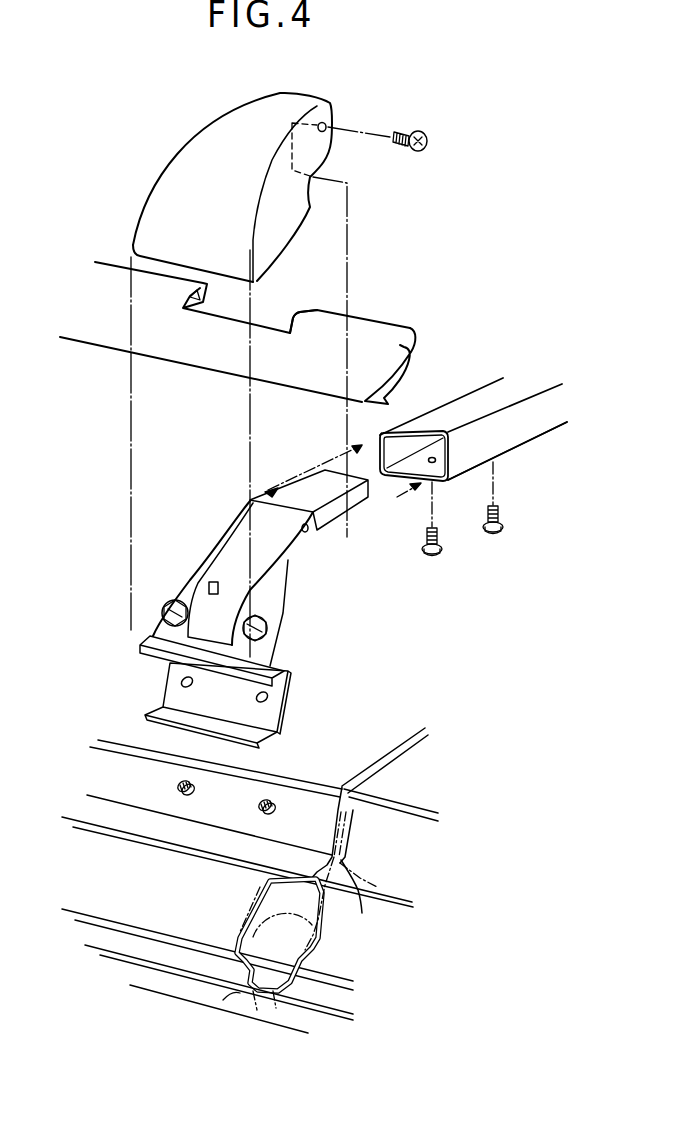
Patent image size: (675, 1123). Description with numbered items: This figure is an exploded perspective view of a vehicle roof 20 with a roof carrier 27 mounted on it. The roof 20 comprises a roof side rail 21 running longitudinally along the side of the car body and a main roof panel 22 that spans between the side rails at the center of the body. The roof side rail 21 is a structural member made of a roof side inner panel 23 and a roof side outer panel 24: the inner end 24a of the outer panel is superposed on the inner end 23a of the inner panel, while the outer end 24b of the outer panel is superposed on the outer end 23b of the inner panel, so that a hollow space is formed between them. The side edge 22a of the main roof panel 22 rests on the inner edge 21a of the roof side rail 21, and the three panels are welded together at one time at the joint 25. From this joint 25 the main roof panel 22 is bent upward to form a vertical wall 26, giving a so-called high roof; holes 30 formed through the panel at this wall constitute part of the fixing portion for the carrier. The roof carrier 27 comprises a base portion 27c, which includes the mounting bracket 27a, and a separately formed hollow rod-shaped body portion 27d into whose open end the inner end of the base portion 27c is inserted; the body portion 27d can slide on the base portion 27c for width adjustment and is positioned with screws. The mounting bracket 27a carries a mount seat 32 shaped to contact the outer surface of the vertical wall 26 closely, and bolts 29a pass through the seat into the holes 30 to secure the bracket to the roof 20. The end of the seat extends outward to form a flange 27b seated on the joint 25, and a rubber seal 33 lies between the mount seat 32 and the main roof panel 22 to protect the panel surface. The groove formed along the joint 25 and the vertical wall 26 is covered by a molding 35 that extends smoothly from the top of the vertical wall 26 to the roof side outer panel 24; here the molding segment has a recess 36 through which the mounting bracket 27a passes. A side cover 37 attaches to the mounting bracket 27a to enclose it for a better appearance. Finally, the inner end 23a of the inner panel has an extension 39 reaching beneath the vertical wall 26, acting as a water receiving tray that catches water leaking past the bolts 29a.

The roof 20 is at (383, 728).
The roof side rail 21 is at (147, 1082).
The inner edge of the roof side rail 21a is at (505, 928).
The main roof panel 22 is at (408, 728).
The side edge of the main roof panel 22a is at (395, 883).
The roof side inner panel 23 is at (240, 933).
The inner end of the roof side inner panel 23a is at (377, 887).
The outer end of the roof side inner panel 23b is at (263, 995).
The roof side outer panel 24 is at (193, 902).
The inner end of the roof side outer panel 24a is at (362, 913).
The outer end of the roof side outer panel 24b is at (240, 998).
The joint 25 is at (367, 871).
The vertical wall 26 is at (137, 780).
The roof carrier 27 is at (472, 402).
The mounting bracket 27a is at (263, 566).
The flange 27b is at (173, 650).
The base portion 27c is at (313, 490).
The body portion 27d is at (535, 420).
The bolts 29a is at (173, 612).
The holes 30 is at (270, 802).
The mount seat 32 is at (265, 598).
The rubber seal 33 is at (288, 695).
The molding 35 is at (110, 313).
The recess 36 is at (290, 331).
The side cover 37 is at (190, 202).
The extension 39 is at (355, 833).